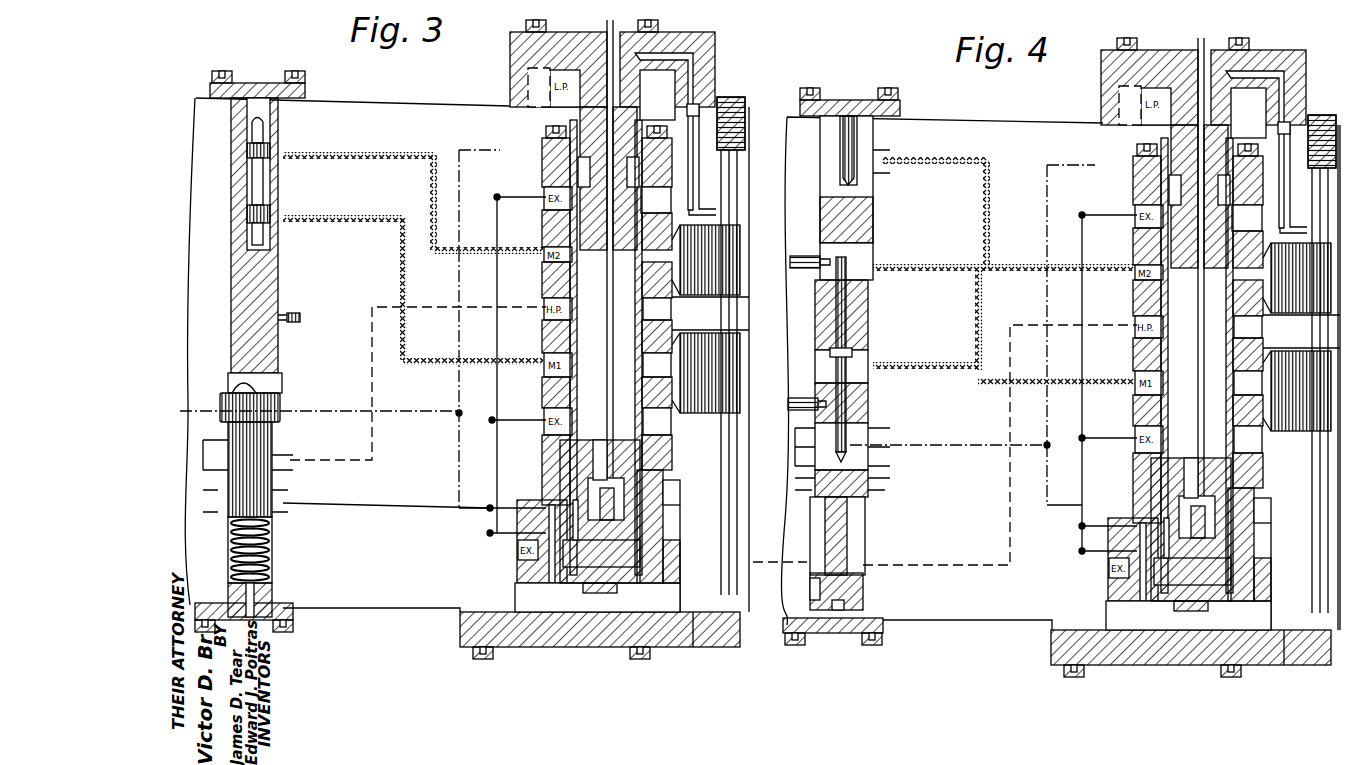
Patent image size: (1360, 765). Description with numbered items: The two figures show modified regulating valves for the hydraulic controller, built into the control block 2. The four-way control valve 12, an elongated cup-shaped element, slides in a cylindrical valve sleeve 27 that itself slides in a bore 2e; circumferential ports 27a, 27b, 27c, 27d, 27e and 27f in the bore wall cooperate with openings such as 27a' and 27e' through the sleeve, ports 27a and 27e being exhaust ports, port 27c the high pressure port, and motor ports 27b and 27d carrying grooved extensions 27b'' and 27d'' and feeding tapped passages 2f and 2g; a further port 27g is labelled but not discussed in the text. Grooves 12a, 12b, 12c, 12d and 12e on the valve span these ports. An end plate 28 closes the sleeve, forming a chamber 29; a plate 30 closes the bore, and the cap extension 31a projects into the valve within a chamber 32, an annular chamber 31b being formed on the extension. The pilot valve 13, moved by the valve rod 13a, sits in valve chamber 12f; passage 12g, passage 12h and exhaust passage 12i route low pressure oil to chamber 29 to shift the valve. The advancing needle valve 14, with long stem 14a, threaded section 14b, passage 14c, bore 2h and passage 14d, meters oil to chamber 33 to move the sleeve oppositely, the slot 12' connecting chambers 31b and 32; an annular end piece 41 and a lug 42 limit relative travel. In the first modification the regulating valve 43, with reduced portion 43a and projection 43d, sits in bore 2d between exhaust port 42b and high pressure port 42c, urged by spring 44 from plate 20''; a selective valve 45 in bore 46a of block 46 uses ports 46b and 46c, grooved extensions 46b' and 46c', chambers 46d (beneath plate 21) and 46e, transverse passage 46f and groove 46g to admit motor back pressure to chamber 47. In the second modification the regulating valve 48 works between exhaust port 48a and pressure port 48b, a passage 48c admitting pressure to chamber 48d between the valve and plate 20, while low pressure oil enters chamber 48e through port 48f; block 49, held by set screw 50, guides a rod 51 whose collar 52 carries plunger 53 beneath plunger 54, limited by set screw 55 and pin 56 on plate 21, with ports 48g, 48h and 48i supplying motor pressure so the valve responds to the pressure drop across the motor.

In FIG. 3, the control block 2 is at (444, 104).
In FIG. 3, the bore 2d is at (217, 100).
In FIG. 4, the bore 2d is at (787, 516).
In FIG. 3, the bore 2e is at (655, 518).
In FIG. 3, the tapped passage 2f is at (740, 243).
In FIG. 4, the tapped passage 2f is at (1305, 270).
In FIG. 3, the tapped passage 2g is at (740, 370).
In FIG. 4, the tapped passage 2g is at (1292, 432).
In FIG. 3, the passage or bore 2h is at (737, 208).
In FIG. 4, the passage or bore 2h is at (1318, 524).
In FIG. 3, the four-way control valve 12 is at (601, 345).
In FIG. 4, the four-way control valve 12 is at (1192, 363).
In FIG. 3, the slot 12' is at (765, 95).
In FIG. 4, the slot 12' is at (1293, 104).
In FIG. 3, the groove 12a is at (555, 138).
In FIG. 4, the groove 12a is at (1148, 155).
In FIG. 3, the groove 12b is at (576, 262).
In FIG. 4, the groove 12b is at (1167, 280).
In FIG. 3, the groove 12c is at (576, 292).
In FIG. 4, the groove 12c is at (1167, 310).
In FIG. 3, the groove 12d is at (575, 388).
In FIG. 4, the groove 12d is at (1166, 406).
In FIG. 3, the groove 12e is at (574, 440).
In FIG. 4, the groove 12e is at (1165, 458).
In FIG. 3, the valve chamber 12f is at (648, 450).
In FIG. 4, the valve chamber 12f is at (1240, 470).
In FIG. 3, the passage 12g is at (545, 528).
In FIG. 4, the passage 12g is at (1136, 546).
In FIG. 3, the passage 12h is at (548, 536).
In FIG. 4, the passage 12h is at (1139, 554).
In FIG. 3, the exhaust passage 12i is at (630, 480).
In FIG. 4, the exhaust passage 12i is at (1212, 440).
In FIG. 3, the pilot valve 13 is at (615, 468).
In FIG. 4, the pilot valve 13 is at (1206, 486).
In FIG. 3, the valve rod 13a is at (606, 30).
In FIG. 4, the valve rod 13a is at (1197, 48).
In FIG. 3, the advancing or synchronous valve 14 is at (730, 600).
In FIG. 4, the advancing or synchronous valve 14 is at (1262, 607).
In FIG. 3, the valve stem 14a is at (725, 316).
In FIG. 4, the valve stem 14a is at (1313, 330).
In FIG. 3, the threaded section 14b is at (725, 97).
In FIG. 4, the threaded section 14b is at (1322, 118).
In FIG. 3, the passage 14c is at (689, 58).
In FIG. 4, the passage 14c is at (1280, 76).
In FIG. 3, the passage 14d is at (695, 612).
In FIG. 4, the passage 14d is at (1287, 630).
In FIG. 4, the plate 20 is at (833, 643).
In FIG. 3, the plate 20'' is at (271, 611).
In FIG. 3, the plate 21 is at (262, 83).
In FIG. 4, the plate 21 is at (845, 100).
In FIG. 3, the valve sleeve 27 is at (652, 538).
In FIG. 4, the valve sleeve 27 is at (1243, 556).
In FIG. 3, the exhaust port 27a is at (521, 180).
In FIG. 4, the exhaust port 27a is at (1111, 198).
In FIG. 3, the opening 27a' is at (521, 204).
In FIG. 4, the opening 27a' is at (1112, 222).
In FIG. 3, the motor port 27b is at (521, 227).
In FIG. 4, the motor port 27b is at (1112, 245).
In FIG. 3, the grooved extension 27b'' is at (519, 266).
In FIG. 4, the grooved extension 27b'' is at (1110, 284).
In FIG. 3, the high pressure port 27c is at (542, 300).
In FIG. 4, the high pressure port 27c is at (1133, 318).
In FIG. 3, the motor port 27d is at (520, 354).
In FIG. 4, the motor port 27d is at (1111, 372).
In FIG. 3, the grooved extension 27d'' is at (520, 334).
In FIG. 4, the grooved extension 27d'' is at (1111, 352).
In FIG. 3, the exhaust port 27e is at (520, 388).
In FIG. 4, the exhaust port 27e is at (1111, 406).
In FIG. 3, the opening 27e' is at (518, 431).
In FIG. 4, the opening 27e' is at (1109, 449).
In FIG. 3, the port 27f is at (542, 478).
In FIG. 4, the port 27f is at (1133, 496).
In FIG. 3, the sleeve port 27g is at (520, 570).
In FIG. 4, the sleeve port 27g is at (1111, 588).
In FIG. 3, the end plate 28 is at (600, 592).
In FIG. 4, the end plate 28 is at (1200, 612).
In FIG. 3, the chamber 29 is at (672, 560).
In FIG. 4, the chamber 29 is at (1263, 578).
In FIG. 3, the plate 30 is at (535, 640).
In FIG. 4, the plate 30 is at (1148, 660).
In FIG. 4, the cap extension 31a is at (1135, 138).
In FIG. 3, the annular chamber 31b is at (548, 155).
In FIG. 4, the annular chamber 31b is at (1140, 172).
In FIG. 3, the chamber 32 is at (667, 115).
In FIG. 4, the chamber 32 is at (1258, 133).
In FIG. 3, the chamber 33 is at (592, 618).
In FIG. 4, the chamber 33 is at (1188, 637).
In FIG. 3, the annular end piece 41 is at (745, 140).
In FIG. 4, the annular end piece 41 is at (1322, 141).
In FIG. 3, the lug 42 is at (590, 545).
In FIG. 4, the lug 42 is at (1208, 575).
In FIG. 3, the exhaust port 42b is at (210, 508).
In FIG. 3, the high pressure port 42c is at (205, 448).
In FIG. 3, the regulating valve 43 is at (262, 408).
In FIG. 3, the reduced central portion 43a is at (262, 440).
In FIG. 3, the projection 43d is at (250, 383).
In FIG. 3, the spring 44 is at (268, 550).
In FIG. 3, the selective valve 45 is at (250, 200).
In FIG. 3, the block 46 is at (262, 278).
In FIG. 3, the longitudinal bore 46a is at (265, 177).
In FIG. 3, the port 46b is at (395, 192).
In FIG. 3, the grooved extension 46b' is at (312, 122).
In FIG. 3, the port 46c is at (395, 280).
In FIG. 3, the grooved extension 46c' is at (316, 238).
In FIG. 3, the chamber 46d is at (262, 110).
In FIG. 3, the chamber 46e is at (260, 243).
In FIG. 3, the transverse passage 46f is at (232, 186).
In FIG. 3, the longitudinal groove 46g is at (232, 318).
In FIG. 3, the chamber 47 is at (232, 385).
In FIG. 4, the pressure regulating valve 48 is at (862, 588).
In FIG. 4, the exhaust port 48a is at (855, 500).
In FIG. 4, the pressure port 48b is at (868, 548).
In FIG. 4, the passage 48c is at (810, 588).
In FIG. 4, the chamber 48d is at (823, 608).
In FIG. 4, the chamber 48e is at (850, 452).
In FIG. 4, the port 48f is at (800, 448).
In FIG. 4, the port 48g is at (888, 153).
In FIG. 4, the port 48h is at (878, 255).
In FIG. 4, the port 48i is at (880, 355).
In FIG. 4, the block 49 is at (865, 405).
In FIG. 4, the set screw 50 is at (806, 395).
In FIG. 4, the rod 51 is at (825, 360).
In FIG. 4, the collar 52 is at (855, 343).
In FIG. 4, the plunger 53 is at (858, 300).
In FIG. 4, the plunger 54 is at (820, 200).
In FIG. 4, the set screw 55 is at (792, 262).
In FIG. 4, the pin 56 is at (843, 132).